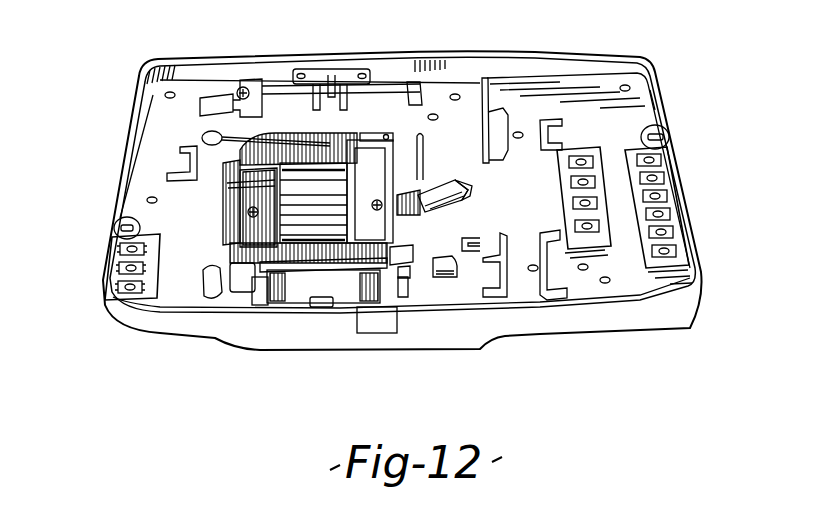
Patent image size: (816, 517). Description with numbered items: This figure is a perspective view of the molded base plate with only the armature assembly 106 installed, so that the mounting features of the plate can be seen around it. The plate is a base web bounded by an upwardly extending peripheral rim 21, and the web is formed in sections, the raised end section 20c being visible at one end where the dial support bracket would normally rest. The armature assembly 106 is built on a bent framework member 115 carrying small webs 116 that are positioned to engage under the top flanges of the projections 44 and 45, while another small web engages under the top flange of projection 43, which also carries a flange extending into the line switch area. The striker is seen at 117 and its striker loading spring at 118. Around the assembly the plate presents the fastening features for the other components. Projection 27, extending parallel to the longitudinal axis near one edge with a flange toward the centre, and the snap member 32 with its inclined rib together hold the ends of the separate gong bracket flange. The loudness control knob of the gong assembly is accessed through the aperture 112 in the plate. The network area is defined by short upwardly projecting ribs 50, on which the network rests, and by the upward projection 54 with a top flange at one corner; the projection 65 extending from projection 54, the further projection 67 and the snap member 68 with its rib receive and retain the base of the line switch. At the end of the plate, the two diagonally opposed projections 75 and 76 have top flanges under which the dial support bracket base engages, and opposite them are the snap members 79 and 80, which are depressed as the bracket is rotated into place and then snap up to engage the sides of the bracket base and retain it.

The peripheral rim 21 is at (552, 38).
The snap member 79 is at (548, 137).
The end section of base web 20c is at (545, 119).
The snap member 32 is at (173, 162).
The upwardly extending projection 27 is at (217, 97).
The striker 117 is at (207, 133).
The projection 75 is at (485, 131).
The ribs 50 is at (423, 151).
The armature assembly 106 is at (222, 210).
The striker loading spring 118 is at (222, 182).
The upward projection 54 is at (436, 188).
The projection 65 is at (457, 196).
The bent framework member 115 is at (343, 287).
The projection 43 is at (405, 253).
The projection 67 is at (450, 258).
The projection 45 is at (403, 272).
The snap member 68 is at (467, 252).
The snap member 80 is at (493, 268).
The projection 76 is at (567, 283).
The aperture 112 is at (198, 287).
The projection 44 is at (247, 283).
The small webs 116 is at (262, 283).